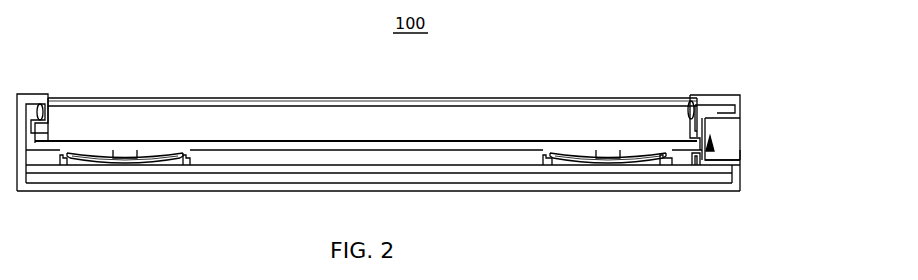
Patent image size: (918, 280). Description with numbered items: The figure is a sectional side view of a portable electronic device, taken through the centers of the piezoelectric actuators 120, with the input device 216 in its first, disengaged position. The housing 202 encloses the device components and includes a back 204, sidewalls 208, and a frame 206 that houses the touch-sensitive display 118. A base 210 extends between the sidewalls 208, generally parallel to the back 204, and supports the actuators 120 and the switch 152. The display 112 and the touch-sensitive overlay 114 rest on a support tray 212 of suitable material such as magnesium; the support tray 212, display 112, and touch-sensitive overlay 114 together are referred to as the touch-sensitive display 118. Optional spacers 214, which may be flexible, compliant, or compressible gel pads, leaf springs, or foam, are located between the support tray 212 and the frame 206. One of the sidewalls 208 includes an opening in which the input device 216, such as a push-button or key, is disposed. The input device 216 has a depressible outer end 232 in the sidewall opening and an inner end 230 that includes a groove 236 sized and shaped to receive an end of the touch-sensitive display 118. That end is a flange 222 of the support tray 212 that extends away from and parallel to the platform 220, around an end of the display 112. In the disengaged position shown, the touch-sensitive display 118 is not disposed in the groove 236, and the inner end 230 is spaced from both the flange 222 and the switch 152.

The display 112 is at (255, 107).
The touch-sensitive overlay 114 is at (313, 100).
The touch-sensitive display 118 is at (207, 99).
The actuators 120 is at (133, 155).
The switch 152 is at (696, 166).
The housing 202 is at (522, 191).
The back 204 is at (464, 184).
The frame 206 is at (28, 95).
The sidewalls 208 is at (737, 180).
The base 210 is at (392, 172).
The support tray 212 is at (332, 150).
The spacers 214 is at (688, 104).
The input device 216 is at (730, 123).
The platform 220 is at (265, 143).
The flange 222 is at (708, 150).
The inner end 230 is at (712, 146).
The outer end 232 is at (741, 152).
The groove 236 is at (711, 142).